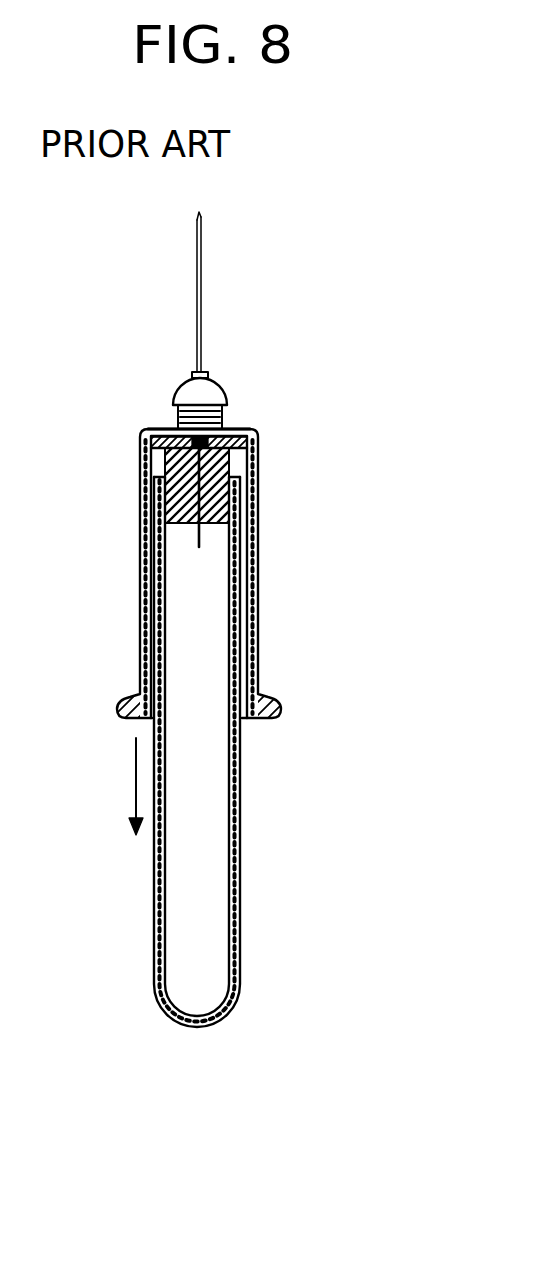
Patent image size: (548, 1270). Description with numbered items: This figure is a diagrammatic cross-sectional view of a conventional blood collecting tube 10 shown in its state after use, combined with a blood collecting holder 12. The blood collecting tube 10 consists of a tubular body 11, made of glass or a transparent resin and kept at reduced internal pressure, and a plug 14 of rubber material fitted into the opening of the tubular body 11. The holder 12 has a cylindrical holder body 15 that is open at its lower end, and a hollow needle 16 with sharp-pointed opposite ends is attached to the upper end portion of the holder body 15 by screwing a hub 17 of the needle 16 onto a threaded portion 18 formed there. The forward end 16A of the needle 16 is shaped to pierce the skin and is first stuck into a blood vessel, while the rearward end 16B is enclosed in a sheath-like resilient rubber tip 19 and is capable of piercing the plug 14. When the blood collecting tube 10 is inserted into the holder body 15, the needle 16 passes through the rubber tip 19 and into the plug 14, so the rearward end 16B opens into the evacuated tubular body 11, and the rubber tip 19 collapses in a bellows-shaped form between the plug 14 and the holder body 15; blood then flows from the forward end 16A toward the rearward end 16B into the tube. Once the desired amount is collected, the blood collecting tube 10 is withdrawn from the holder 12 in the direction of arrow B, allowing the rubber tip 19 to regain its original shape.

The blood collecting tube 10 is at (260, 980).
The tubular body 11 is at (237, 850).
The blood collecting holder 12 is at (243, 430).
The plug 14 is at (142, 515).
The holder body 15 is at (255, 627).
The hollow needle 16 is at (203, 283).
The forward end 16A is at (200, 203).
The rearward end 16B is at (250, 567).
The hub 17 is at (185, 388).
The threaded portion 18 is at (167, 428).
The rubber tip 19 is at (253, 483).
The arrow B is at (135, 782).